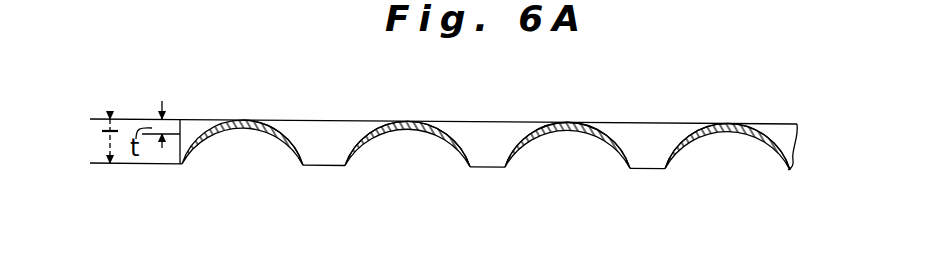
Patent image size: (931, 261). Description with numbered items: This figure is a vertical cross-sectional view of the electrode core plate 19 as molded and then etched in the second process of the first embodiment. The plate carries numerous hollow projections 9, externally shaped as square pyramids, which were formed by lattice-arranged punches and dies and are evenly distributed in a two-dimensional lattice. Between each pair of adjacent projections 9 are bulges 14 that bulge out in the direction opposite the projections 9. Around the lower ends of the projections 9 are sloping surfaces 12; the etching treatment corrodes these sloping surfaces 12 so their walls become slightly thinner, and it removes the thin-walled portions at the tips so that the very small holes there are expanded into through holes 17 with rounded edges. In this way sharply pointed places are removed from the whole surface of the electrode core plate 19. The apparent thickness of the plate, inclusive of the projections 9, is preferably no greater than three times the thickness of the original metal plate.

The projections 9 is at (362, 153).
The sloping surfaces 12 is at (292, 155).
The bulges 14 is at (250, 119).
The through holes 17 is at (325, 166).
The electrode core plate 19 is at (632, 117).